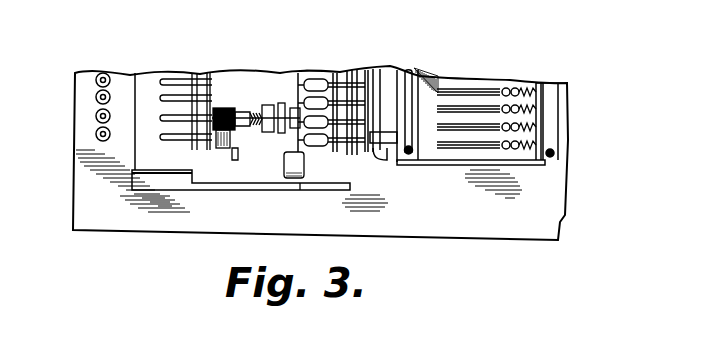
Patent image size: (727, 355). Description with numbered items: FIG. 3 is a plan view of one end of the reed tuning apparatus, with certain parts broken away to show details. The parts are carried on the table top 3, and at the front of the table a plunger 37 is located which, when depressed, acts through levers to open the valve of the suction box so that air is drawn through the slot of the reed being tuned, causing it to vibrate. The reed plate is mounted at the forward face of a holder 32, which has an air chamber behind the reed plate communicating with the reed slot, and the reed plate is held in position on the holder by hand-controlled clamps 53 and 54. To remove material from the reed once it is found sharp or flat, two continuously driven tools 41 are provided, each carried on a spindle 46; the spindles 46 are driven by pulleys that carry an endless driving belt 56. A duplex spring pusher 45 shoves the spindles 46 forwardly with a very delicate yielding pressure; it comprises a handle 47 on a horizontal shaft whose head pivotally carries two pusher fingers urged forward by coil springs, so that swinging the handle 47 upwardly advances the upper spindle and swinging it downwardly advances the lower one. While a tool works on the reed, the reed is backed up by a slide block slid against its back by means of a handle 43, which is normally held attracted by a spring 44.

The table top 3 is at (553, 170).
The plunger 37 is at (96, 133).
The handle 47 is at (168, 140).
The spindles 46 is at (238, 117).
The duplex spring pusher 45 is at (228, 170).
The endless driving belt 56 is at (278, 165).
The tools 41 is at (352, 74).
The hand-controlled clamp 53 is at (372, 150).
The hand-controlled clamp 54 is at (367, 155).
The holder 32 is at (465, 162).
The handle 43 is at (512, 86).
The spring 44 is at (533, 90).